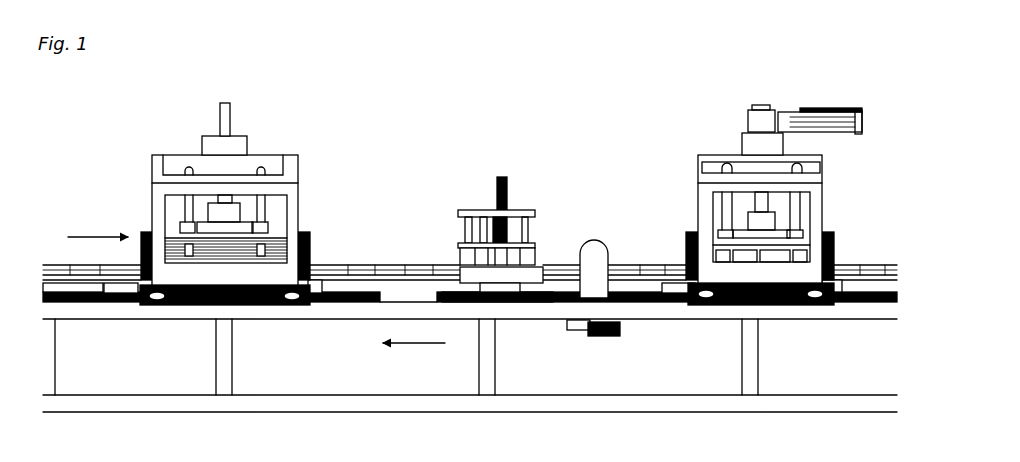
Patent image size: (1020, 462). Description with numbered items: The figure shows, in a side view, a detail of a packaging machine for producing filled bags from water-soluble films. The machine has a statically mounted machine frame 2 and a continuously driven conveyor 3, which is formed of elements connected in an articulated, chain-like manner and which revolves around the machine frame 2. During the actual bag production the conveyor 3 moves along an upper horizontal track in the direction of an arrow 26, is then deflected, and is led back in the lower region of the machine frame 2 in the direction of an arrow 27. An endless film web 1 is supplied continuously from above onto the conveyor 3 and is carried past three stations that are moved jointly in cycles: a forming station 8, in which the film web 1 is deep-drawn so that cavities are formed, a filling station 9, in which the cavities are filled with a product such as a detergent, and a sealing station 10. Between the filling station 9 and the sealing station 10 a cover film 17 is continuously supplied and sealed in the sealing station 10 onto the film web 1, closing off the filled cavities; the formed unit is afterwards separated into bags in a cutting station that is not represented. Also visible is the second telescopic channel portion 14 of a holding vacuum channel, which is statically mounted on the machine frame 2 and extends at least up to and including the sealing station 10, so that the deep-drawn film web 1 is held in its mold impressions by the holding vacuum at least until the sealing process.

The film web 1 is at (44, 263).
The machine frame 2 is at (225, 362).
The conveyor 3 is at (373, 263).
The forming station 8 is at (290, 128).
The filling station 9 is at (480, 180).
The sealing station 10 is at (705, 114).
The second telescopic channel portion 14 is at (412, 277).
The cover film 17 is at (582, 253).
The arrow 26 is at (92, 232).
The arrow 27 is at (419, 348).